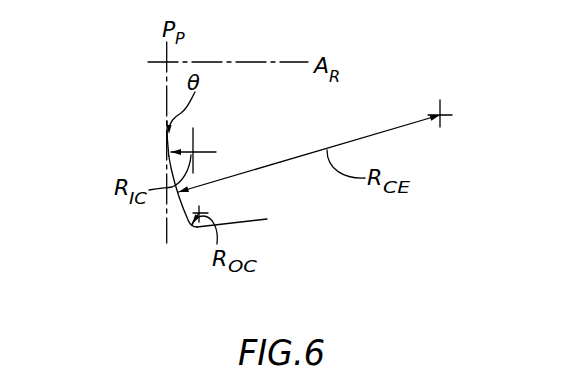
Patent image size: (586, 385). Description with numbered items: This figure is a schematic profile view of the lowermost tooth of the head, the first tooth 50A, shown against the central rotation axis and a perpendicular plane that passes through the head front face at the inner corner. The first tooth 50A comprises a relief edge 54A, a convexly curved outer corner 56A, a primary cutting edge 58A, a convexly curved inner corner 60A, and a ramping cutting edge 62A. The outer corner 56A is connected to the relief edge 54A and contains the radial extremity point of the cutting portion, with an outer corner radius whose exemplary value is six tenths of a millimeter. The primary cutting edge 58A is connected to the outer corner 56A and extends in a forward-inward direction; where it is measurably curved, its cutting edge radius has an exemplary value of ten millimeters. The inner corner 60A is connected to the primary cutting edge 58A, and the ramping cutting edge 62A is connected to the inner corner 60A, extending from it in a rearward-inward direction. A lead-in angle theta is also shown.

The first tooth 50A is at (196, 217).
The relief edge 54A is at (250, 222).
The outer corner 56A is at (191, 228).
The primary cutting edge 58A is at (180, 196).
The inner corner 60A is at (167, 152).
The ramping cutting edge 62A is at (171, 143).